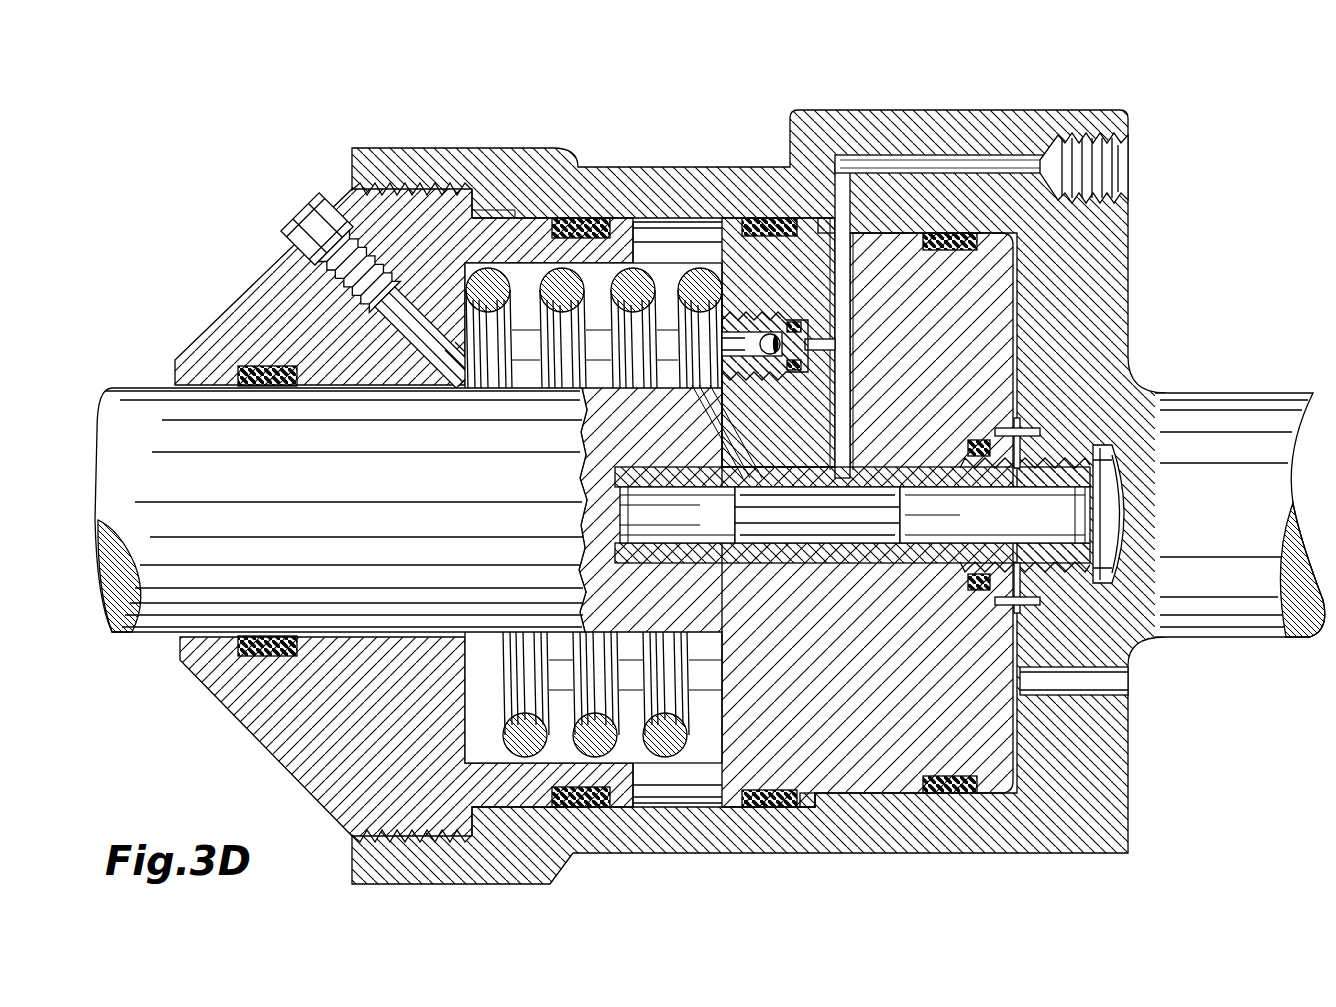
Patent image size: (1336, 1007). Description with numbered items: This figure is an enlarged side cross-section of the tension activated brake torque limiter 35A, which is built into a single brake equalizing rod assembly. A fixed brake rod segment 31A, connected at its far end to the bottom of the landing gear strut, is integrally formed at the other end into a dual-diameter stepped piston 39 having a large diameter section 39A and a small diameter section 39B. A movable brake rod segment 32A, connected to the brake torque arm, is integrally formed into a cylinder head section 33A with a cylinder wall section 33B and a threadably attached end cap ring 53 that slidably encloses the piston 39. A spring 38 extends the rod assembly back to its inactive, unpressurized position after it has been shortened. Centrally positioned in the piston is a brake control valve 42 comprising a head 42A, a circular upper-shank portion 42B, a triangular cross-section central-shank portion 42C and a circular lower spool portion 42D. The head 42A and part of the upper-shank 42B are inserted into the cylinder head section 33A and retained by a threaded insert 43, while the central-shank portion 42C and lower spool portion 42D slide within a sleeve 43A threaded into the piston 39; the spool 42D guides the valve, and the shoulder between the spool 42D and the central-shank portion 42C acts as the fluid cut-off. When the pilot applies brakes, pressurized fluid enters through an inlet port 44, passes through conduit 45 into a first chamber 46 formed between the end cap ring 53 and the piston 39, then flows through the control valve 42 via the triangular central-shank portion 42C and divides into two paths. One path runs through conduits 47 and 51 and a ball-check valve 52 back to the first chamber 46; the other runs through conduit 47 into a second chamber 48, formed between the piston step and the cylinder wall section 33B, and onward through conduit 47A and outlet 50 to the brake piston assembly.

The fixed brake rod segment 31A is at (256, 521).
The movable brake rod segment 32A is at (1285, 400).
The cylinder head section 33A is at (1093, 298).
The cylinder wall section 33B is at (603, 182).
The tension activated brake torque limiter 35A is at (776, 480).
The spring 38 is at (668, 760).
The dual-diameter stepped piston 39 is at (898, 703).
The large diameter section 39A is at (736, 206).
The small diameter section 39B is at (907, 217).
The brake control valve 42 is at (915, 539).
The head 42A is at (1125, 516).
The upper-shank portion 42B is at (903, 530).
The central-shank portion 42C is at (790, 517).
The lower spool portion 42D is at (680, 537).
The threaded insert 43 is at (1070, 455).
The sleeve 43A is at (945, 440).
The inlet port 44 is at (312, 215).
The conduit 45 is at (435, 345).
The first chamber 46 is at (662, 230).
The conduit 47 is at (852, 420).
The conduit 47A is at (877, 168).
The second chamber 48 is at (838, 210).
The outlet 50 is at (1125, 158).
The conduit 51 is at (808, 375).
The ball-check valve 52 is at (743, 386).
The end cap ring 53 is at (256, 308).